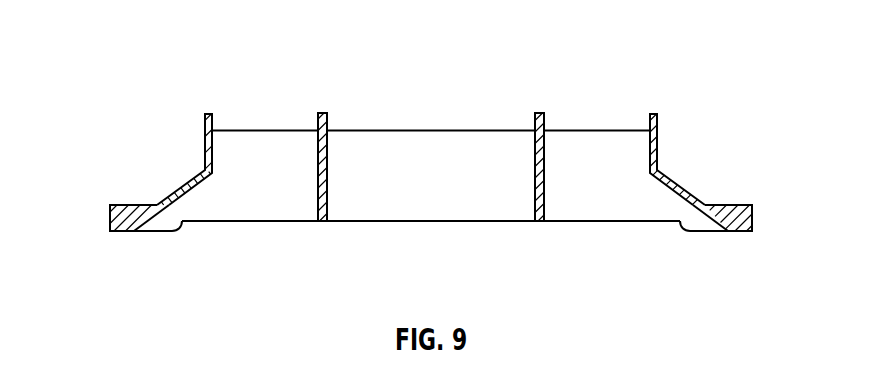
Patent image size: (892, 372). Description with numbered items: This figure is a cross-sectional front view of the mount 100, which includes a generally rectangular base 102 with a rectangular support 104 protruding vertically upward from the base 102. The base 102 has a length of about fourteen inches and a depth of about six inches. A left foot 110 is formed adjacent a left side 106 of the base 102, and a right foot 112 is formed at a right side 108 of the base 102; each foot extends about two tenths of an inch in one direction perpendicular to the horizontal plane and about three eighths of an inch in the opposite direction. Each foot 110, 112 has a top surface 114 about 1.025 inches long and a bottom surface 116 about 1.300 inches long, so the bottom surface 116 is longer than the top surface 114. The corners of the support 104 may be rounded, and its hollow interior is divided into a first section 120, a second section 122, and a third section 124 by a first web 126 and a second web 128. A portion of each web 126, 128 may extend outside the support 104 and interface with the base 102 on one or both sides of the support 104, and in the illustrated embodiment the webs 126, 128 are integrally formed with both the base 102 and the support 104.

The mount 100 is at (719, 30).
The base 102 is at (101, 221).
The rectangular support 104 is at (679, 136).
The left side 106 is at (110, 213).
The right side 108 is at (752, 218).
The left foot 110 is at (132, 226).
The right foot 112 is at (732, 228).
The top surface 114 is at (153, 203).
The bottom surface 116 is at (158, 232).
The first section 120 is at (265, 153).
The second section 122 is at (432, 153).
The third section 124 is at (591, 153).
The first web 126 is at (328, 183).
The second web 128 is at (545, 190).